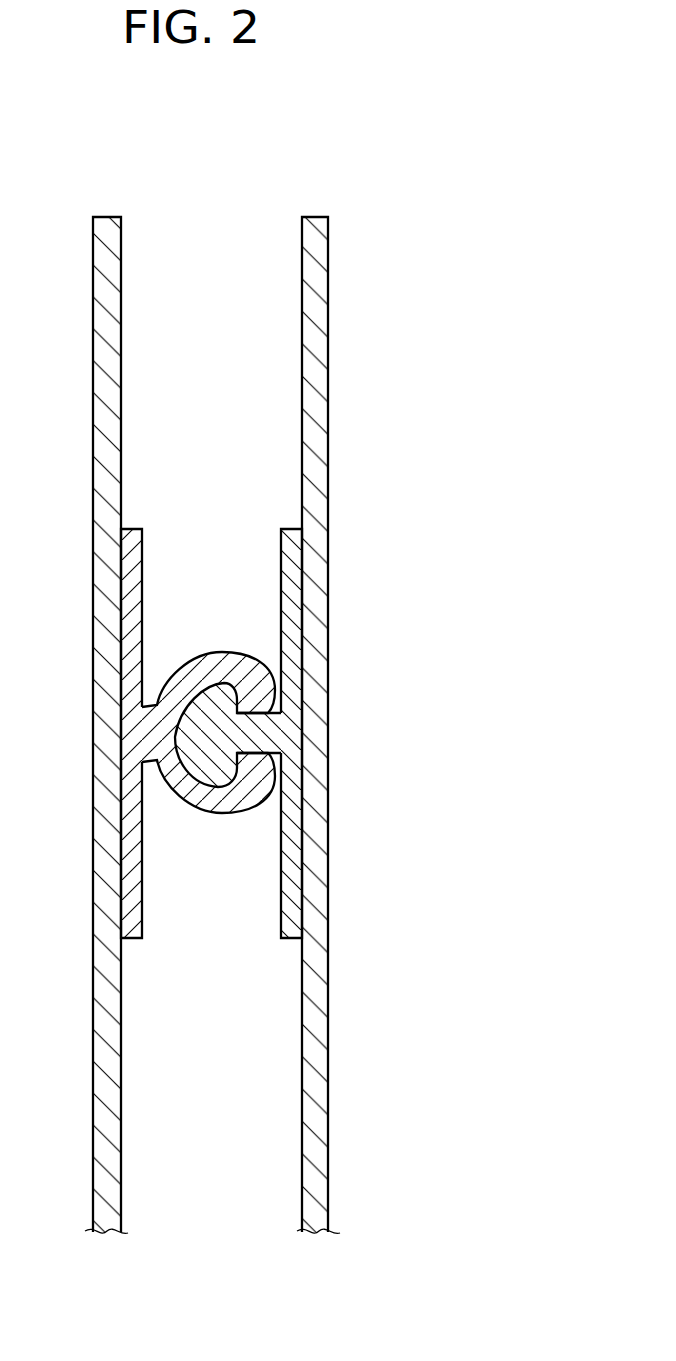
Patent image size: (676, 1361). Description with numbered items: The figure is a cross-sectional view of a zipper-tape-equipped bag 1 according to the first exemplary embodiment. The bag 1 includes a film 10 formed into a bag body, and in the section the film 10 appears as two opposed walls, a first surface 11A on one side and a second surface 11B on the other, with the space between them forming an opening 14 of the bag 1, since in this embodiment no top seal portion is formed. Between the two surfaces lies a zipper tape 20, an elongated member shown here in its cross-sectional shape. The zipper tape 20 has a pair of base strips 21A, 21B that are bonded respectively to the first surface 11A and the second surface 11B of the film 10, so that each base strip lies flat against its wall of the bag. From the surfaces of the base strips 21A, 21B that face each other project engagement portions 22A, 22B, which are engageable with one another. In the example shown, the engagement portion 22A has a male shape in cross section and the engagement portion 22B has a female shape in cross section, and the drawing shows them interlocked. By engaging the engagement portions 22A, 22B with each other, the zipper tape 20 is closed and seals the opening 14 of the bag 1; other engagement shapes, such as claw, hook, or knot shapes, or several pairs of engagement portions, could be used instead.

The zipper-tape-equipped bag 1 is at (527, 286).
The film 10 is at (288, 1255).
The first surface 11A is at (121, 1118).
The second surface 11B is at (302, 1117).
The opening 14 is at (218, 222).
The zipper tape 20 is at (213, 394).
The base strip 21A is at (288, 549).
The base strip 21B is at (135, 567).
The engagement portion 22A is at (220, 700).
The engagement portion 22B is at (193, 683).